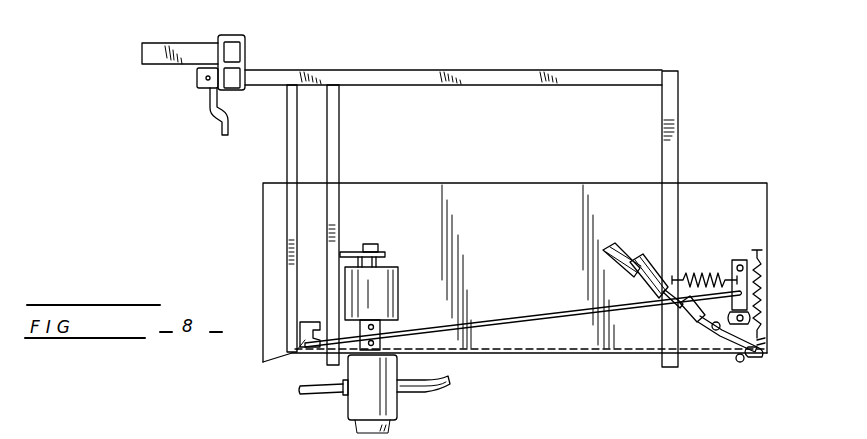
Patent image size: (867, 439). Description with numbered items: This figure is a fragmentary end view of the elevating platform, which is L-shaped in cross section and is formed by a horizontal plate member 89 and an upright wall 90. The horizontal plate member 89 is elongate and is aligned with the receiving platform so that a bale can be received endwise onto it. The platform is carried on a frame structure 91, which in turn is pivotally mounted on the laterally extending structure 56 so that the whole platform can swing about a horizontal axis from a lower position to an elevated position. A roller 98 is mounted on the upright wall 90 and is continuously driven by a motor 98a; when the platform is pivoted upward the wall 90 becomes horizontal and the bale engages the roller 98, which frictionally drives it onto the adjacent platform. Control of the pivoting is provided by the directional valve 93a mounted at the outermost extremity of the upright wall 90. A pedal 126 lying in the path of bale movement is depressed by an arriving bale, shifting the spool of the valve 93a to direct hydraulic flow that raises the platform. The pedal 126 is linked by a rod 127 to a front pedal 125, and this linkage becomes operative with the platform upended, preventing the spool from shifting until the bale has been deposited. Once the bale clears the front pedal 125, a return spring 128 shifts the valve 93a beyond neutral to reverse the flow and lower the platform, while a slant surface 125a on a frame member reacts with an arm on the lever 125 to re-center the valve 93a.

The structure 56 is at (200, 52).
The horizontal plate member 89 is at (570, 355).
The upright wall 90 is at (532, 193).
The frame structure 91 is at (670, 124).
The directional valve 93a is at (650, 268).
The roller 98 is at (393, 282).
The motor 98a is at (385, 402).
The front pedal 125 is at (302, 330).
The slant surface 125a is at (297, 353).
The pedal 126 is at (766, 341).
The rod 127 is at (483, 322).
The return spring 128 is at (706, 276).